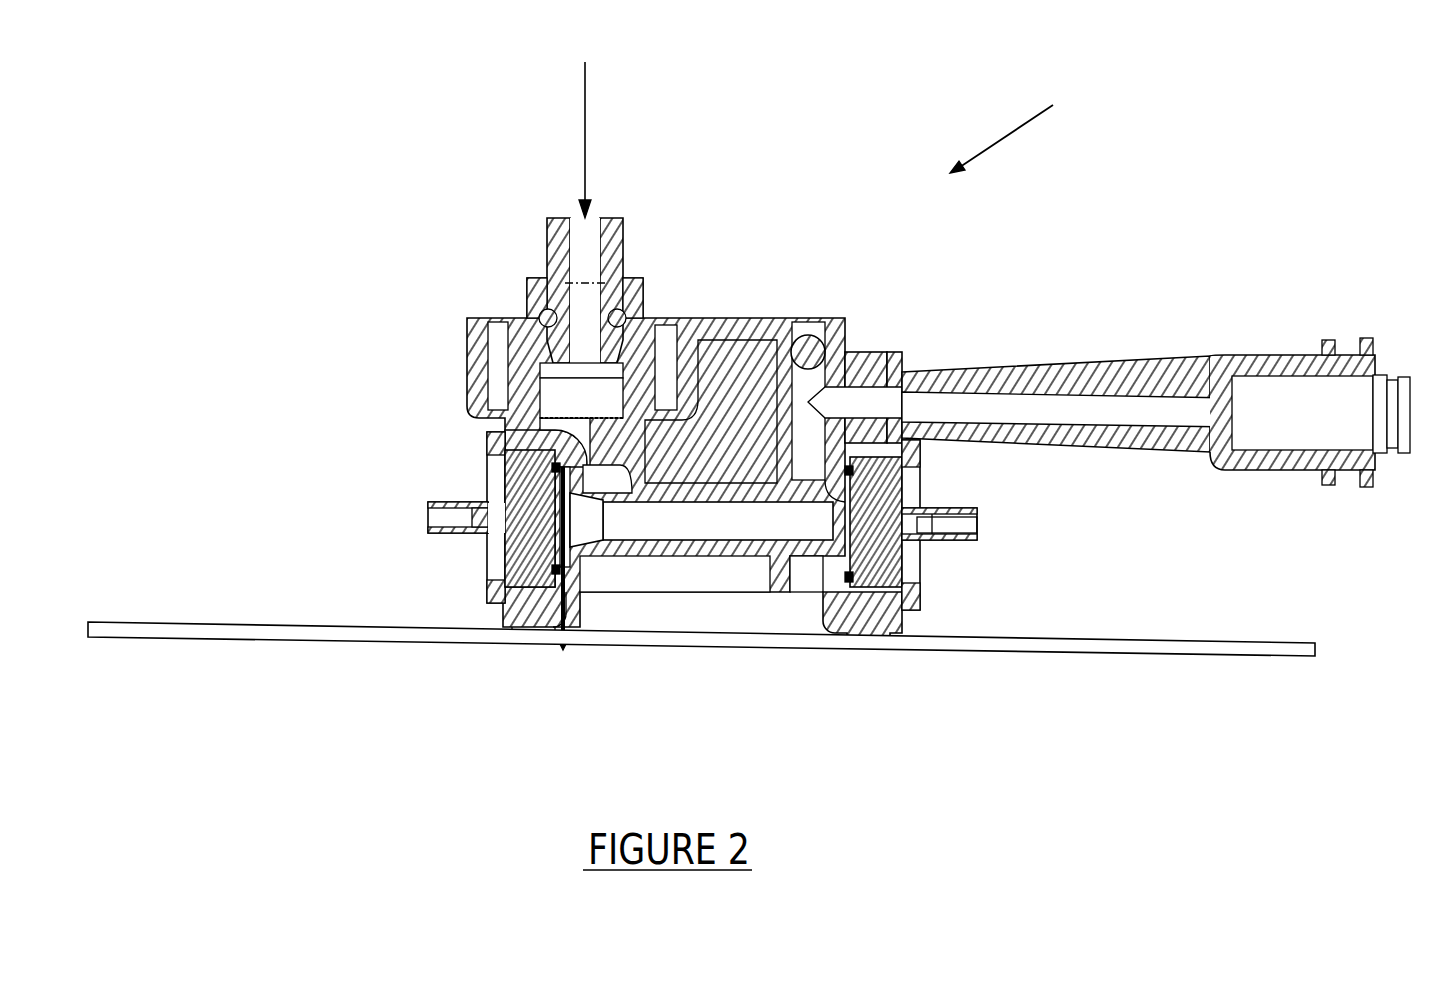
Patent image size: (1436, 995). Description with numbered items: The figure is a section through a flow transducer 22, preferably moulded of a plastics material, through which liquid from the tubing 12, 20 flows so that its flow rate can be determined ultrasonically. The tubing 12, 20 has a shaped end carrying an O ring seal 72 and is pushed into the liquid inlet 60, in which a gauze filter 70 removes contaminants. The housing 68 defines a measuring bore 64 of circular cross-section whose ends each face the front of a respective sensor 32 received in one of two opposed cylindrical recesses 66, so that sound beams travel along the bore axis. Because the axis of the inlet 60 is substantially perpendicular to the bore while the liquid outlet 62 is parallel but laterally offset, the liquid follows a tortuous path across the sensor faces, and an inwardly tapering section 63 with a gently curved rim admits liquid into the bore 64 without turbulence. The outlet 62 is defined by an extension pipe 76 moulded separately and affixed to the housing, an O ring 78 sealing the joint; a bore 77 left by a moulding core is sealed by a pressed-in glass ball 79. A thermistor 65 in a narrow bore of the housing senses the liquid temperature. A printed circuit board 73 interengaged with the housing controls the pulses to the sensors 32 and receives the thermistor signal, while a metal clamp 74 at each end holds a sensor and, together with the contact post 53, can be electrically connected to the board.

The tubing 12 is at (437, 220).
The tubing 20 is at (556, 233).
The flow transducer 22 is at (1110, 117).
The sensor 32 is at (518, 560).
The contact post 53 is at (975, 510).
The liquid inlet 60 is at (640, 275).
The liquid outlet 62 is at (1262, 437).
The inwardly tapering section 63 is at (583, 543).
The measuring bore 64 is at (723, 540).
The thermistor 65 is at (560, 650).
The cylindrical recess 66 is at (487, 437).
The housing 68 is at (710, 320).
The gauze filter 70 is at (540, 410).
The O ring seal 72 is at (548, 316).
The printed circuit board 73 is at (1197, 650).
The metal clamp 74 is at (905, 600).
The extension pipe 76 is at (1112, 378).
The bore 77 is at (847, 360).
The O ring 78 is at (887, 375).
The glass ball 79 is at (818, 350).